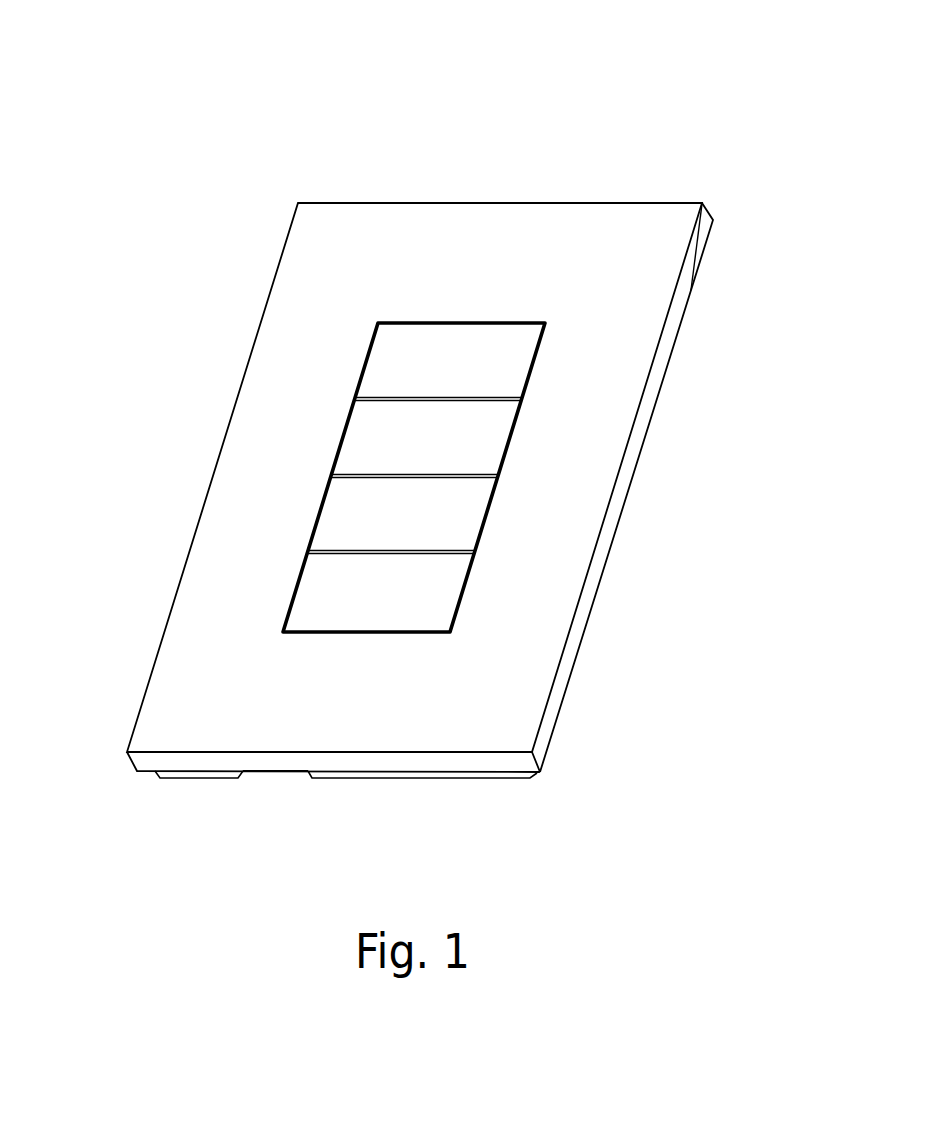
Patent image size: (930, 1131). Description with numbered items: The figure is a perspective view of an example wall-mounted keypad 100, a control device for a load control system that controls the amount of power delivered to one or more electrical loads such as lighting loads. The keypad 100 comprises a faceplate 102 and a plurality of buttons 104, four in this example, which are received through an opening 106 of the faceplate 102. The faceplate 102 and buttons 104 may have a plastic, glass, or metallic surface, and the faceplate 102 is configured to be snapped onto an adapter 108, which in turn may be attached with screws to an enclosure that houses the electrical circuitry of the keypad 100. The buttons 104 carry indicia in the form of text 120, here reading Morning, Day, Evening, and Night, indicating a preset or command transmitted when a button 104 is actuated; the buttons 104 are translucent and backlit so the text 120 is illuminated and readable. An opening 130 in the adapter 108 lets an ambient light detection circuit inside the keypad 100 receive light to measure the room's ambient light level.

The keypad 100 is at (482, 137).
The faceplate 102 is at (300, 278).
The buttons 104 is at (503, 365).
The opening 106 is at (313, 632).
The adapter 108 is at (467, 777).
The text 120 is at (355, 340).
The opening 130 is at (272, 780).